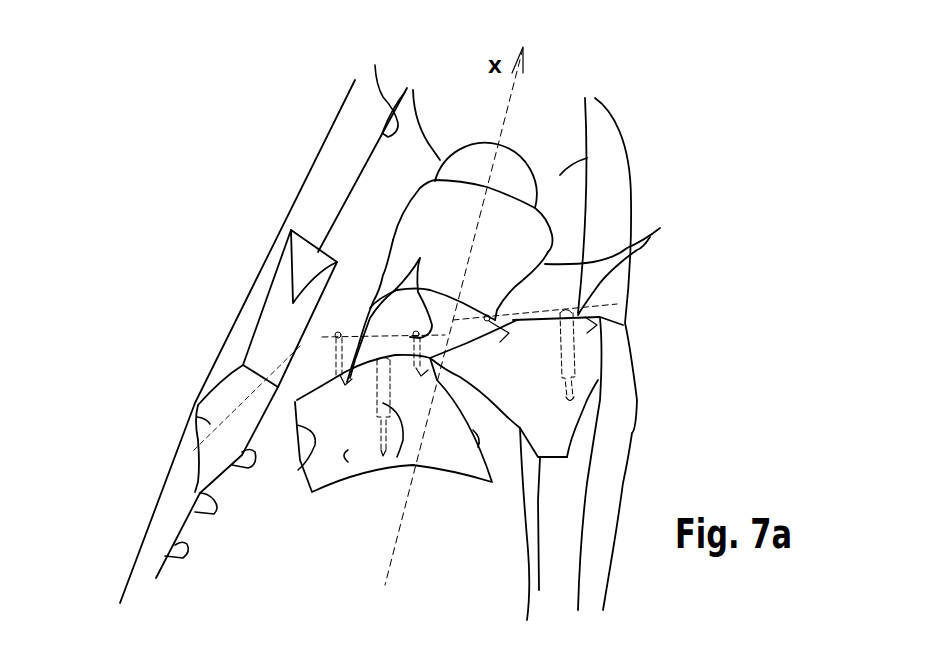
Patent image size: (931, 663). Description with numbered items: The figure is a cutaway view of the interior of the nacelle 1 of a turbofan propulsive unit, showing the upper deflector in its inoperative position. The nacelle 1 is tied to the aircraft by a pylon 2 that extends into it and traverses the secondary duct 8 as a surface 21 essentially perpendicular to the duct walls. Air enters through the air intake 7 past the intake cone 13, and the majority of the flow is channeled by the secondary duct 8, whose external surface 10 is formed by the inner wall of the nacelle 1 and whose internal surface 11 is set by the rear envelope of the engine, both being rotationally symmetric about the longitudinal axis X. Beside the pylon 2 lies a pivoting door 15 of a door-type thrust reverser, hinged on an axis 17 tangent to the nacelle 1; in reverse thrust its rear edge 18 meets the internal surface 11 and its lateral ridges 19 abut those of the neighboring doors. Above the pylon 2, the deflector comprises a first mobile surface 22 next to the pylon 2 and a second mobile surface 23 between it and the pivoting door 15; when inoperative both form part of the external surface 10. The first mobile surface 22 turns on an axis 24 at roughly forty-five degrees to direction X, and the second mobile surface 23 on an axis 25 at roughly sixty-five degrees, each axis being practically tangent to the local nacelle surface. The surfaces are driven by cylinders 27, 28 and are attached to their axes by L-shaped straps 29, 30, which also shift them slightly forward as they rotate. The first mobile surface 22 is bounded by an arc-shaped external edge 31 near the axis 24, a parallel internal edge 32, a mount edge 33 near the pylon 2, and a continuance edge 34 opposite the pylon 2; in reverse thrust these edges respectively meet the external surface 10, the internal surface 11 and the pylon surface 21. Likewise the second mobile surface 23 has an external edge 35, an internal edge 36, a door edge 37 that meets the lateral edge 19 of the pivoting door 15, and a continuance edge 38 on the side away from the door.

The nacelle 1 is at (323, 183).
The pylon 2 is at (608, 490).
The air intake 7 is at (552, 70).
The secondary duct 8 is at (212, 562).
The external surface 10 is at (96, 553).
The internal surface 11 is at (248, 535).
The intake cone 13 is at (508, 173).
The pivoting door 15 is at (218, 352).
The axis 17 is at (197, 417).
The rear edge 18 is at (213, 508).
The lateral ridge 19 is at (232, 465).
The surface 21 is at (567, 507).
The first mobile surface 22 is at (587, 345).
The second mobile surface 23 is at (435, 437).
The axis 24 is at (603, 310).
The axis 25 is at (322, 337).
The cylinder 27 is at (567, 363).
The cylinder 28 is at (388, 458).
The L-shaped strap 29 is at (625, 257).
The L-shaped strap 30 is at (400, 306).
The external edge 31 is at (470, 335).
The internal edge 32 is at (558, 460).
The mount edge 33 is at (583, 415).
The continuance edge 34 is at (480, 388).
The external edge 35 is at (360, 383).
The internal edge 36 is at (348, 462).
The door edge 37 is at (297, 457).
The continuance edge 38 is at (473, 430).